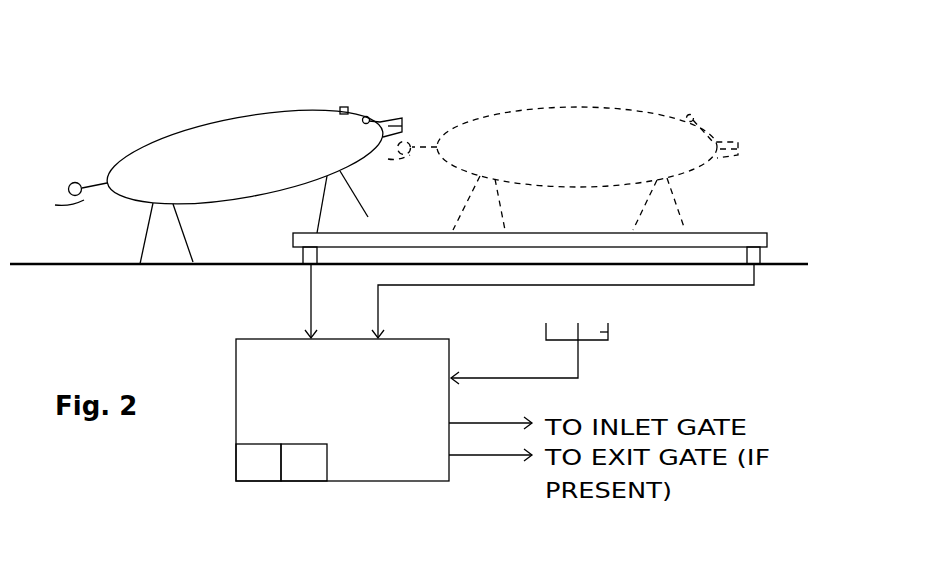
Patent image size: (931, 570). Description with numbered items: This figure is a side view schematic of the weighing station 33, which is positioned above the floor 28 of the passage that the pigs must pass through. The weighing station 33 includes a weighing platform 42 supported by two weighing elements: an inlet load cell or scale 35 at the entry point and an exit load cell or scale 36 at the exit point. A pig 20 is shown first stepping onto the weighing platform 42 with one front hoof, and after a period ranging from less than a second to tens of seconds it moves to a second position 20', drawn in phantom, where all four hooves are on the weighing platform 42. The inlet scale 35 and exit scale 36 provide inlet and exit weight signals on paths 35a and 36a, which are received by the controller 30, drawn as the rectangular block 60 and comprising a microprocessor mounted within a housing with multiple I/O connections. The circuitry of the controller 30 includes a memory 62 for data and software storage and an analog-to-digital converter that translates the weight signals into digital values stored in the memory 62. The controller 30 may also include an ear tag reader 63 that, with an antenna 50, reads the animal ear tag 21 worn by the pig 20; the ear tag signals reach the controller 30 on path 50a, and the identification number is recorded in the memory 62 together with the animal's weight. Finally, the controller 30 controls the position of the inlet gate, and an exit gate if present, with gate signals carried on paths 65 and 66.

The pig 20 is at (228, 165).
The animal ear tag 21 is at (341, 108).
The second position of pig 20' is at (563, 148).
The floor 28 is at (202, 266).
The controller 30 is at (478, 361).
The weighing station 33 is at (843, 159).
The inlet load cell (inlet scale) 35 is at (302, 256).
The inlet weight signal path 35a is at (307, 323).
The exit load cell (exit scale) 36 is at (760, 264).
The exit weight signal path 36a is at (667, 287).
The weighing platform 42 is at (755, 242).
The antenna 50 is at (612, 330).
The ear tag signal path 50a is at (580, 363).
The controller 60 is at (236, 358).
The memory 62 is at (260, 475).
The ear tag reader 63 is at (305, 477).
The gate signal path 65 is at (490, 423).
The gate signal path 66 is at (508, 455).